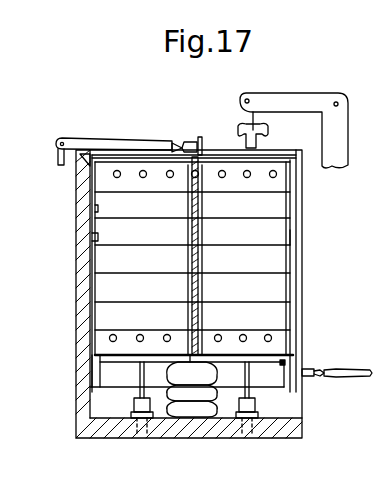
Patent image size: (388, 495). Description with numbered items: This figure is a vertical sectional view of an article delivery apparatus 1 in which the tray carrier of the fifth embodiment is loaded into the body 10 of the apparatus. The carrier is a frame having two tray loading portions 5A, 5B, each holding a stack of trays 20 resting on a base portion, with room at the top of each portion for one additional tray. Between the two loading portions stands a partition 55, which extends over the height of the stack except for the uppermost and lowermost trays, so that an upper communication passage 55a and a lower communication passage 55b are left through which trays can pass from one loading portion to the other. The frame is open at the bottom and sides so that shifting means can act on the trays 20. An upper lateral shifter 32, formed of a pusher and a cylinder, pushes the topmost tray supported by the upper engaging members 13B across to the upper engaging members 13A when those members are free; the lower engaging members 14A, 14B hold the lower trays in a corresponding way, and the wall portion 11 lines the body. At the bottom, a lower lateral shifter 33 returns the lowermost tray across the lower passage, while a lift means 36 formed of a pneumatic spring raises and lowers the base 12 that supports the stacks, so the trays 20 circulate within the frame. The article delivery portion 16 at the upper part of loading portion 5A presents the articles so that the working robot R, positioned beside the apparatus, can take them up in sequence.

The article delivery apparatus 1 is at (306, 258).
The tray loading portion 5A is at (288, 241).
The tray loading portion 5B is at (96, 208).
The main body 10 is at (301, 301).
The wall insulation 11 is at (93, 237).
The base 12 is at (287, 372).
The upper engaging members 13A is at (275, 170).
The upper engaging members 13B is at (113, 174).
The lower holes 14A is at (272, 339).
The lower holes 14B is at (110, 337).
The article delivery portion 16 is at (228, 158).
The tray 20 is at (283, 322).
The upper lateral shifter 32 is at (88, 139).
The lower lateral shifter 33 is at (336, 377).
The lift means 36 is at (205, 414).
The partition 55 is at (199, 268).
The communication passage 55a is at (190, 178).
The communication passage 55b is at (189, 368).
The working robot R is at (345, 139).